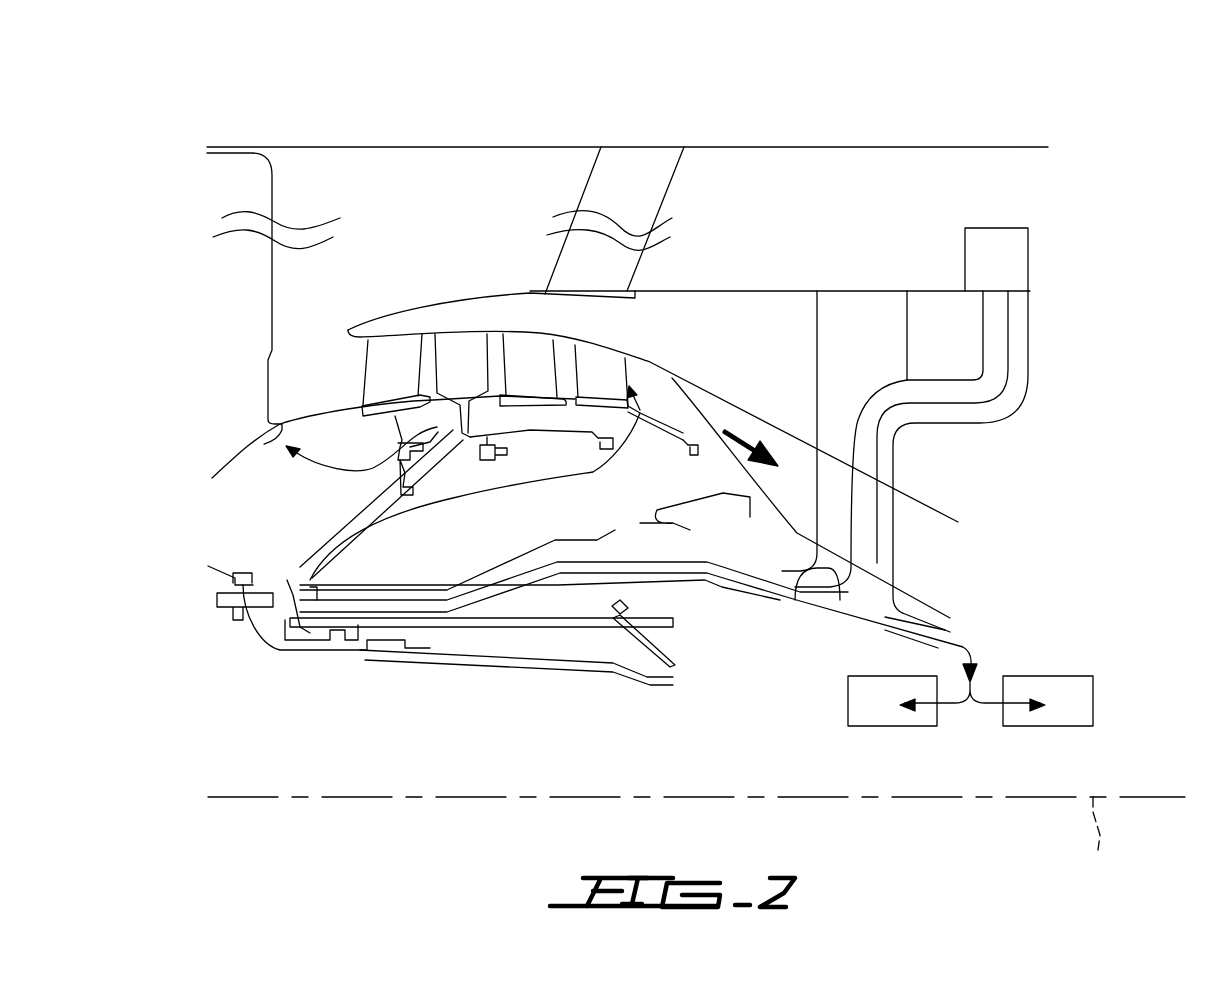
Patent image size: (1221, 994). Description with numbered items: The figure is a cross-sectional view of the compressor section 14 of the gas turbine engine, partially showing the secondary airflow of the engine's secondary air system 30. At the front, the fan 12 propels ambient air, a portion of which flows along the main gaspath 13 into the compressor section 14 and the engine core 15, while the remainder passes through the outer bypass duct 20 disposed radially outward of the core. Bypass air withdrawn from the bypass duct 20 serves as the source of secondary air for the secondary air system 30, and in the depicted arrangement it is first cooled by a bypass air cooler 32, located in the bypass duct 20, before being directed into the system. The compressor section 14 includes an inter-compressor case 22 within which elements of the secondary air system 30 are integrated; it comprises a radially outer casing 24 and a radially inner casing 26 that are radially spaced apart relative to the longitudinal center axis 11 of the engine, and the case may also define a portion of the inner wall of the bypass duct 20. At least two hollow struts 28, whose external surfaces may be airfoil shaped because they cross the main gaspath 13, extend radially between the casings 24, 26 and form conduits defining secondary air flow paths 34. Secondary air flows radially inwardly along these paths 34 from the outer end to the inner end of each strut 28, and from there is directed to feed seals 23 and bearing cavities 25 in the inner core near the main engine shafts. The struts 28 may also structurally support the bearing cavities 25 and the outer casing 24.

The longitudinal center axis 11 is at (1100, 845).
The fan 12 is at (228, 352).
The main gaspath 13 is at (745, 433).
The compressor section 14 is at (1099, 125).
The engine core 15 is at (688, 318).
The outer bypass duct 20 is at (833, 223).
The inter-compressor case 22 is at (885, 290).
The seals 23 is at (390, 650).
The radially outer casing 24 is at (868, 568).
The bearing cavities 25 is at (893, 727).
The radially inner casing 26 is at (815, 565).
The struts 28 is at (905, 529).
The secondary air system 30 is at (1090, 422).
The bypass air cooler 32 is at (1013, 253).
The secondary air flow paths 34 is at (880, 482).